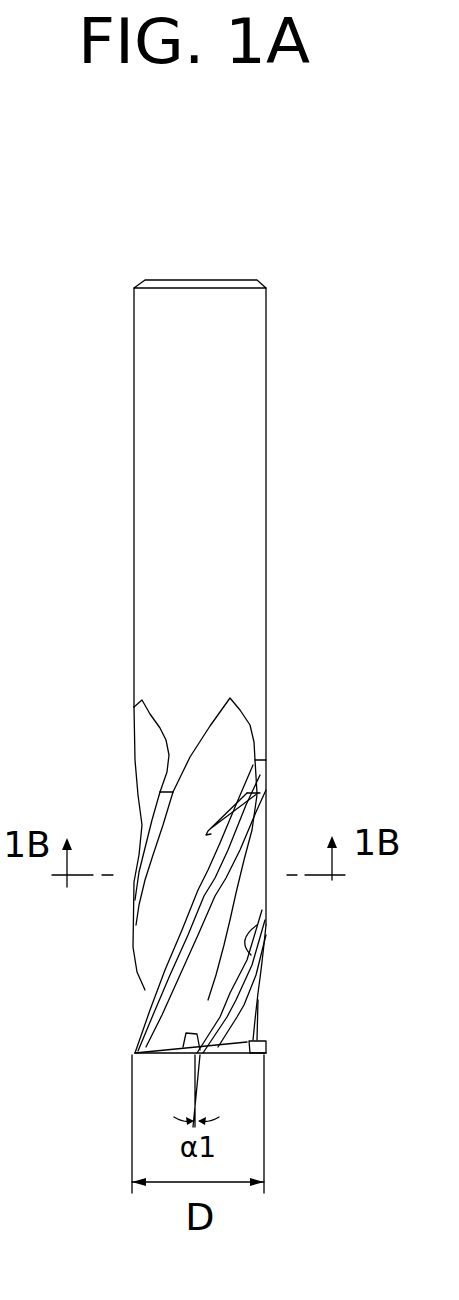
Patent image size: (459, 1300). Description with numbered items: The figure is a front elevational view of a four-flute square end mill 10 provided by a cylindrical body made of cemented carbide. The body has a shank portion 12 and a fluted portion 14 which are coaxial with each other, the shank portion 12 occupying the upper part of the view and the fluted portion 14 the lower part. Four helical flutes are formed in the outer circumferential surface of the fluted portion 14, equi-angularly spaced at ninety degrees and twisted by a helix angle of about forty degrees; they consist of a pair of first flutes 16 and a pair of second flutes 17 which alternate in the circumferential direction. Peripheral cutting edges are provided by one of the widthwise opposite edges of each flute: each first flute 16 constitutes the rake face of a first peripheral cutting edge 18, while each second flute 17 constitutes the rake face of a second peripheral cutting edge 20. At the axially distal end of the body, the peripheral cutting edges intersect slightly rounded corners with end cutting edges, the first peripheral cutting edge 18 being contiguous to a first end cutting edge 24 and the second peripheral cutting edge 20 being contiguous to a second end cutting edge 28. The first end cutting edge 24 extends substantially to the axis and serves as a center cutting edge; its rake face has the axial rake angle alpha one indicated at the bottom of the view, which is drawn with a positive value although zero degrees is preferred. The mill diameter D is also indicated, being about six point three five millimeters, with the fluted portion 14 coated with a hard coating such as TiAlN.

The four-flute square end mill 10 is at (270, 256).
The shank portion 12 is at (152, 413).
The fluted portion 14 is at (88, 1061).
The first flute 16 is at (200, 975).
The second flute 17 is at (170, 847).
The first peripheral cutting edge 18 is at (263, 923).
The second peripheral cutting edge 20 is at (182, 913).
The first end cutting edge 24 is at (200, 1055).
The second end cutting edge 28 is at (233, 1060).